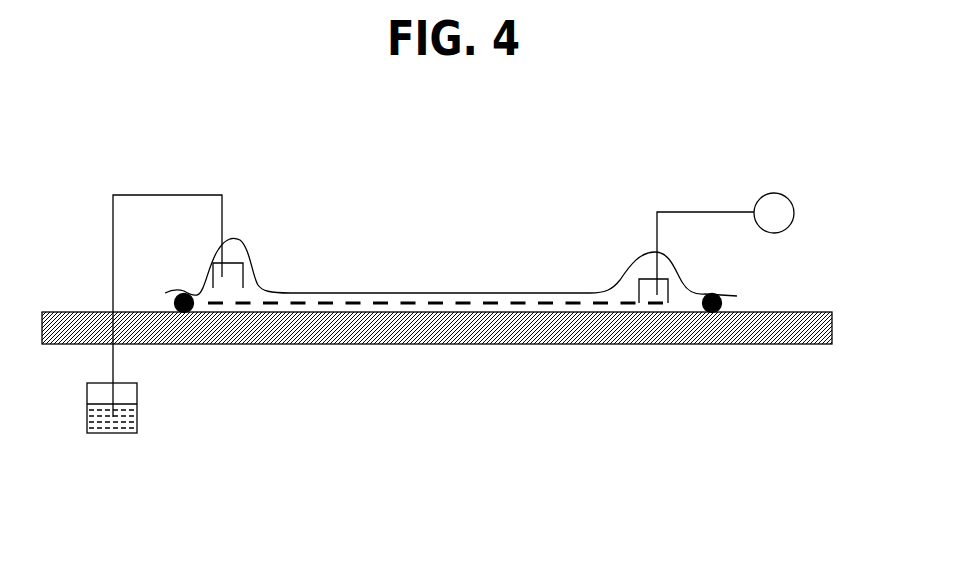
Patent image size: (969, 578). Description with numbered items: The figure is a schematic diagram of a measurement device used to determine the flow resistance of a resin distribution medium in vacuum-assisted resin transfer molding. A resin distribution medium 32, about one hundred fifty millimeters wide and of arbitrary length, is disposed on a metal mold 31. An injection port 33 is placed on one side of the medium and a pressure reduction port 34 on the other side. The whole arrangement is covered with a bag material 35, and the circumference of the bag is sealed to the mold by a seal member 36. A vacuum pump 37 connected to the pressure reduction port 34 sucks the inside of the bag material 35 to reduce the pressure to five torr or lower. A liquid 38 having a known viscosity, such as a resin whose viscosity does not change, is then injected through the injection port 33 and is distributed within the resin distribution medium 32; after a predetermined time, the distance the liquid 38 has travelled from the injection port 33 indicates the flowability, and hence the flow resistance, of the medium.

The metal mold 31 is at (598, 344).
The resin distribution medium 32 is at (406, 303).
The injection port 33 is at (235, 267).
The pressure reduction port 34 is at (670, 302).
The bag material 35 is at (493, 293).
The seal member 36 is at (187, 313).
The vacuum pump 37 is at (775, 193).
The liquid 38 is at (128, 433).